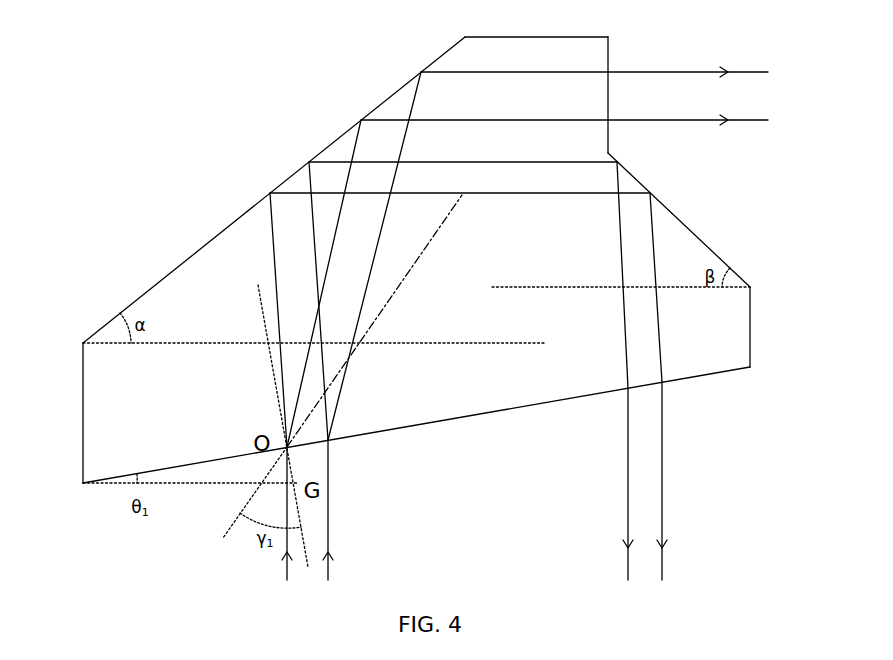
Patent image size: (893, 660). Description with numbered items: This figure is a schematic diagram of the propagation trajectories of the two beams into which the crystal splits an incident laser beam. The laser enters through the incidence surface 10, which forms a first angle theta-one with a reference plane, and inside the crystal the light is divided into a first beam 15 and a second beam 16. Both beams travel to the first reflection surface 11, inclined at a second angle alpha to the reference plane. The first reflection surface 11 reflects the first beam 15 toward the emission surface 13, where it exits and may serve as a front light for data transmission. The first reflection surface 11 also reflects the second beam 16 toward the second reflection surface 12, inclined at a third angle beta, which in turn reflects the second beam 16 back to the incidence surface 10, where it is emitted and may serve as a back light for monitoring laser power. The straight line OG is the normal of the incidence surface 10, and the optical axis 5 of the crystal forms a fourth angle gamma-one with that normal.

The optical axis 5 is at (345, 373).
The incidence surface 10 is at (468, 415).
The first reflection surface 11 is at (200, 252).
The second reflection surface 12 is at (688, 225).
The emission surface 13 is at (611, 53).
The first beam 15 is at (680, 122).
The second beam 16 is at (665, 498).